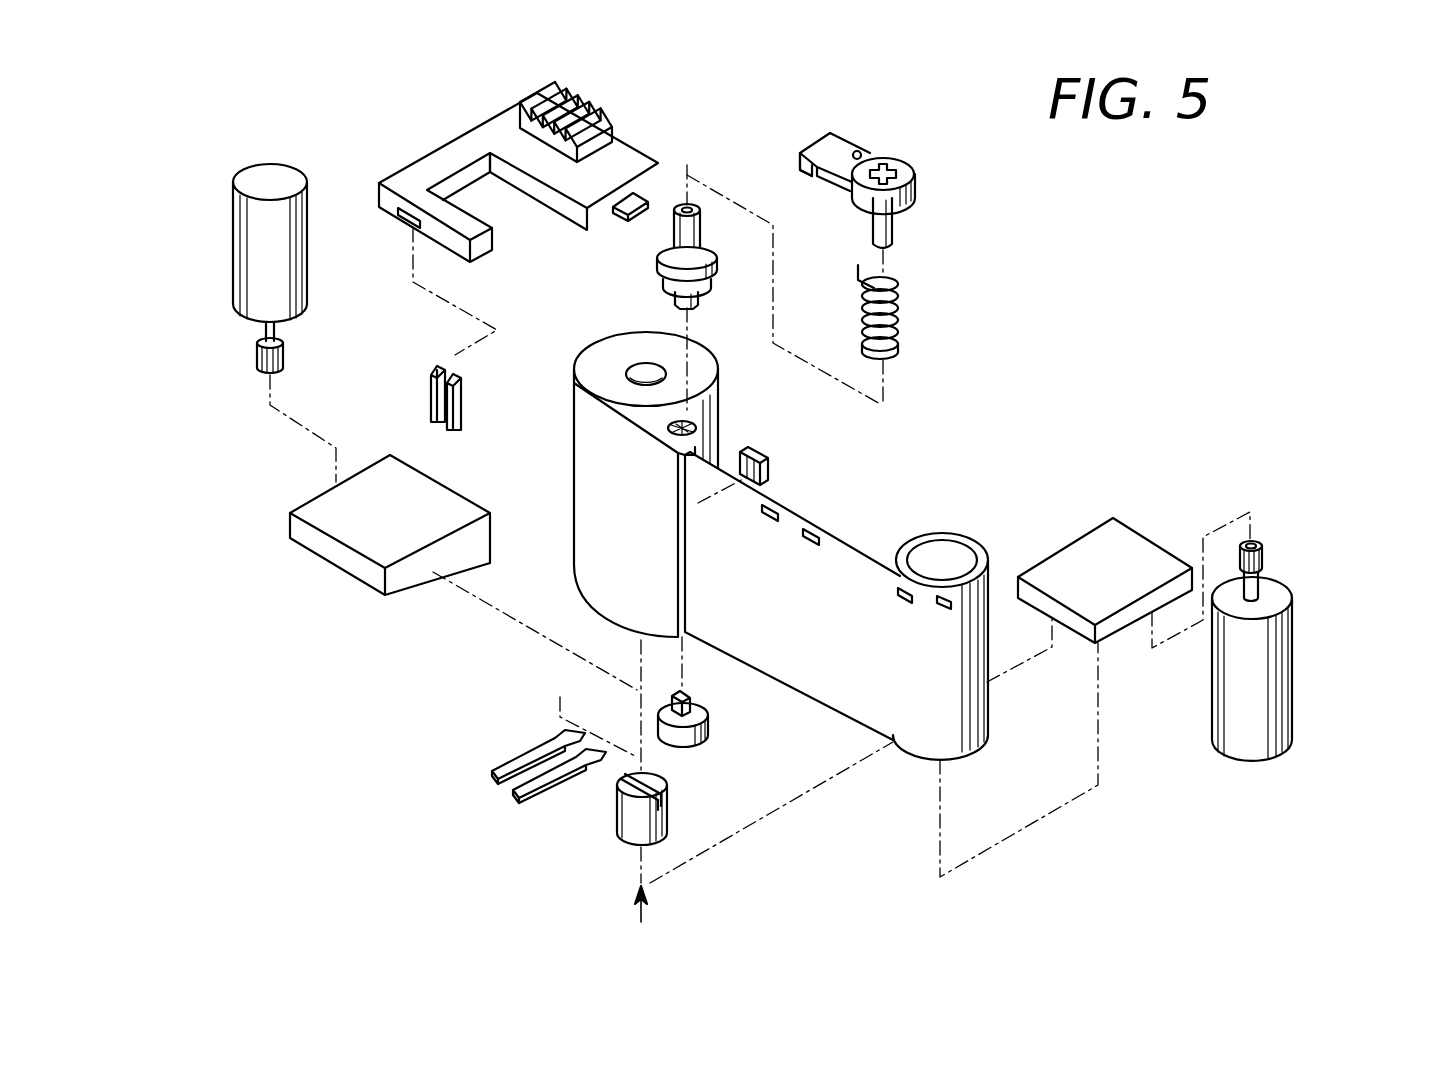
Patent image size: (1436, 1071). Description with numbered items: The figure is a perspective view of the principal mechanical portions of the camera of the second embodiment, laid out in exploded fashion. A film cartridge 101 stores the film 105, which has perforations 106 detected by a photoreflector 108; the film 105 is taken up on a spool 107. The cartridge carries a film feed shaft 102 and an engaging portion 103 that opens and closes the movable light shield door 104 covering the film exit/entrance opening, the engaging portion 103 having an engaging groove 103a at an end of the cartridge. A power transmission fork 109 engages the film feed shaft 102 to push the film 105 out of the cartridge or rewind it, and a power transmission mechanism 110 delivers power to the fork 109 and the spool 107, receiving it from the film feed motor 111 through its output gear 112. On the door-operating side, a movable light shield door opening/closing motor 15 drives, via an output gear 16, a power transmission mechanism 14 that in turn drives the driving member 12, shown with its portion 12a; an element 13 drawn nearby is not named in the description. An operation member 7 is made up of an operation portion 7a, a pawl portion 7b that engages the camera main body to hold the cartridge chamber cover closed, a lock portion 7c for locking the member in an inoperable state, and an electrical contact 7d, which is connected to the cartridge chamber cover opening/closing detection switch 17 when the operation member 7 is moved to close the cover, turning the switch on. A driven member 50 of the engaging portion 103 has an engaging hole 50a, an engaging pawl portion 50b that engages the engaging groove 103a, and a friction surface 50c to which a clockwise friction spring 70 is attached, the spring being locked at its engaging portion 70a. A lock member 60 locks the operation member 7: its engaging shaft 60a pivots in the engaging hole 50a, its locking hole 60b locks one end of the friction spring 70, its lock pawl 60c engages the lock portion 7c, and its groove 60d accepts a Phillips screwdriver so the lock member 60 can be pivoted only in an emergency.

The operation member 7 is at (495, 174).
The operation portion 7a is at (572, 101).
The pawl portion 7b is at (609, 212).
The lock portion 7c is at (492, 228).
The electrical contact 7d is at (381, 216).
The driving member 12 is at (713, 719).
The key projection 12a is at (690, 697).
The contact blades 13 is at (494, 773).
The power transmission mechanism 14 is at (400, 577).
The movable light shield door opening/closing motor 15 is at (292, 181).
The output gear 16 is at (258, 362).
The cartridge chamber cover opening/closing detection switch 17 is at (447, 366).
The driven member 50 is at (672, 234).
The engaging hole 50a is at (687, 205).
The engaging pawl portion 50b is at (656, 291).
The friction surface 50c is at (713, 262).
The lock member 60 is at (880, 163).
The engaging shaft 60a is at (893, 232).
The locking hole 60b is at (859, 151).
The lock pawl 60c is at (805, 142).
The groove 60d is at (890, 170).
The friction spring 70 is at (877, 288).
The engaging portion 70a is at (856, 265).
The film cartridge 101 is at (752, 535).
The film feed shaft 102 is at (648, 377).
The engaging portion 103 is at (708, 424).
The engaging groove 103a is at (700, 422).
The movable light shield door 104 is at (696, 452).
The film 105 is at (772, 506).
The perforations 106 is at (823, 537).
The spool 107 is at (958, 552).
The photoreflector 108 is at (762, 457).
The power transmission fork 109 is at (628, 823).
The power transmission mechanism 110 is at (1078, 557).
The film feed motor 111 is at (1278, 714).
The output gear 112 is at (1264, 568).